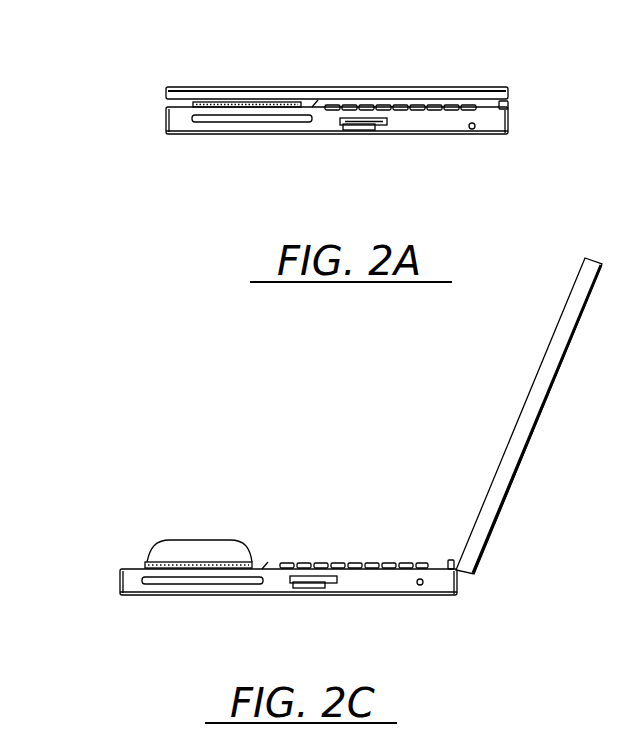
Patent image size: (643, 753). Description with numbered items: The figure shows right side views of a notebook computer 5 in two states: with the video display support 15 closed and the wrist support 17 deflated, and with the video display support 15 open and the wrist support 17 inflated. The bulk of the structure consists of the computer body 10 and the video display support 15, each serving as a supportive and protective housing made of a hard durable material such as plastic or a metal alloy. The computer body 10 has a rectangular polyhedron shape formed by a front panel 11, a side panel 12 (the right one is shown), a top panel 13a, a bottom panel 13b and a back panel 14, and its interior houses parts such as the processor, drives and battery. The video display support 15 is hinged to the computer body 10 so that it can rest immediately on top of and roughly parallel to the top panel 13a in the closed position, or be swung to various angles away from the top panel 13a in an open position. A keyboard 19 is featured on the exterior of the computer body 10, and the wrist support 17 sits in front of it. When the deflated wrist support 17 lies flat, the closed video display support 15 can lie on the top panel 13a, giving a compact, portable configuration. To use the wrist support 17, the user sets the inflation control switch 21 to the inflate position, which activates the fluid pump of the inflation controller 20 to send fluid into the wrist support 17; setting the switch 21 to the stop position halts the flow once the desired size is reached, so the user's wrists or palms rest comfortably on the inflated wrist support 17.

In FIG. 2A, the notebook computer 5 is at (226, 148).
In FIG. 2C, the notebook computer 5 is at (176, 608).
In FIG. 2A, the computer body 10 is at (445, 135).
In FIG. 2C, the computer body 10 is at (405, 598).
In FIG. 2A, the front panel 11 is at (166, 120).
In FIG. 2C, the front panel 11 is at (120, 583).
In FIG. 2A, the side panel 12 is at (418, 125).
In FIG. 2C, the side panel 12 is at (360, 590).
In FIG. 2A, the top panel 13a is at (317, 107).
In FIG. 2C, the top panel 13a is at (268, 568).
In FIG. 2A, the bottom panel 13b is at (290, 135).
In FIG. 2C, the bottom panel 13b is at (235, 597).
In FIG. 2A, the back panel 14 is at (508, 125).
In FIG. 2C, the back panel 14 is at (460, 586).
In FIG. 2A, the video display support 15 is at (468, 88).
In FIG. 2C, the video display support 15 is at (513, 483).
In FIG. 2A, the wrist support 17 is at (208, 103).
In FIG. 2C, the wrist support 17 is at (200, 540).
In FIG. 2C, the keyboard 19 is at (335, 563).
In FIG. 2A, the inflation controller 20 is at (360, 133).
In FIG. 2C, the inflation controller 20 is at (317, 590).
In FIG. 2A, the inflation control switch 21 is at (508, 109).
In FIG. 2C, the inflation control switch 21 is at (450, 560).